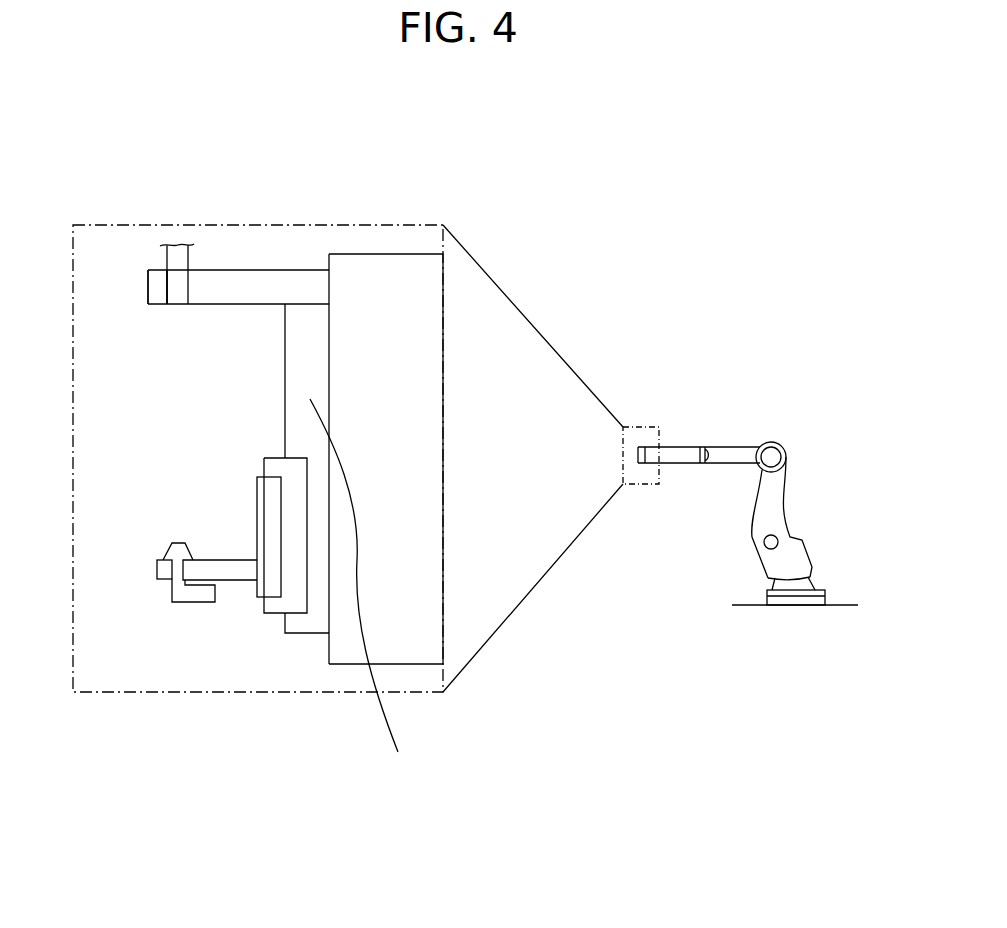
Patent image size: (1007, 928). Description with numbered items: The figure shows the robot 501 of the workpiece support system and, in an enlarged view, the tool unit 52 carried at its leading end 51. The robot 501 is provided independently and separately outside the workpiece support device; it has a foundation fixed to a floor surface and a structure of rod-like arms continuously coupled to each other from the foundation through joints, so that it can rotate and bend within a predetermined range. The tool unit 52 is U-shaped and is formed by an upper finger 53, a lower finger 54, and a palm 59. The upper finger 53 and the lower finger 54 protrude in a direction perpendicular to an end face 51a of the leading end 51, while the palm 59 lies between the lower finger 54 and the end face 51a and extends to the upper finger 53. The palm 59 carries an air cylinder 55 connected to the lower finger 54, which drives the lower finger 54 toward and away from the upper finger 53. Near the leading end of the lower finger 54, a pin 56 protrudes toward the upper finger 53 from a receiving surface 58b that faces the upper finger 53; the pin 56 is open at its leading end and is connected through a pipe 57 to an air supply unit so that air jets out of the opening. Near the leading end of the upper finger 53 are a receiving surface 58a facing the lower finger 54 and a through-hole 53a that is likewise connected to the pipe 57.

The leading end 51 is at (388, 254).
The end face 51a is at (330, 262).
The tool unit 52 is at (292, 161).
The upper finger 53 is at (238, 260).
The through-hole 53a is at (167, 285).
The lower finger 54 is at (233, 580).
The air cylinder 55 is at (257, 505).
The pin 56 is at (165, 555).
The pipe 57 is at (167, 260).
The receiving surface 58a is at (195, 307).
The receiving surface 58b is at (203, 558).
The palm 59 is at (368, 591).
The robot 501 is at (820, 374).